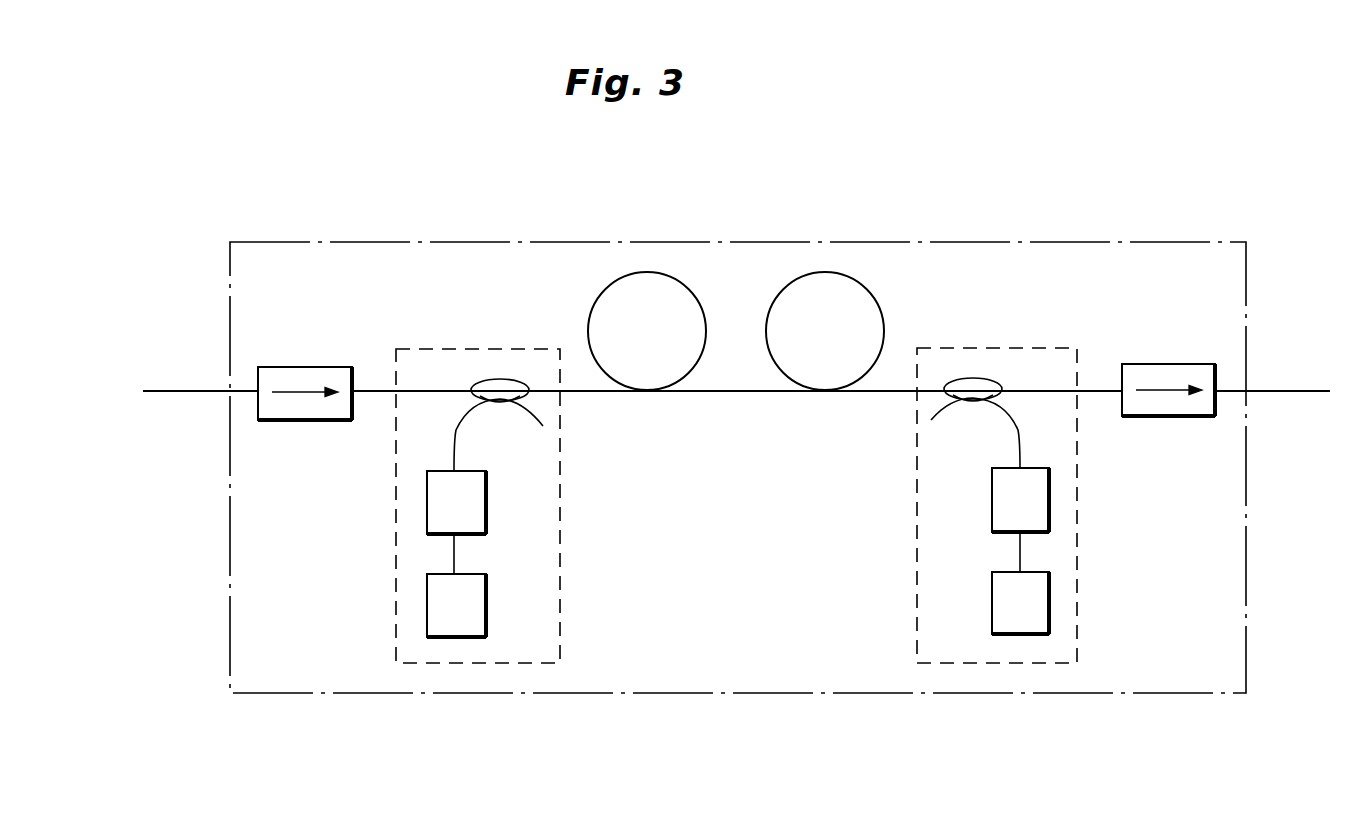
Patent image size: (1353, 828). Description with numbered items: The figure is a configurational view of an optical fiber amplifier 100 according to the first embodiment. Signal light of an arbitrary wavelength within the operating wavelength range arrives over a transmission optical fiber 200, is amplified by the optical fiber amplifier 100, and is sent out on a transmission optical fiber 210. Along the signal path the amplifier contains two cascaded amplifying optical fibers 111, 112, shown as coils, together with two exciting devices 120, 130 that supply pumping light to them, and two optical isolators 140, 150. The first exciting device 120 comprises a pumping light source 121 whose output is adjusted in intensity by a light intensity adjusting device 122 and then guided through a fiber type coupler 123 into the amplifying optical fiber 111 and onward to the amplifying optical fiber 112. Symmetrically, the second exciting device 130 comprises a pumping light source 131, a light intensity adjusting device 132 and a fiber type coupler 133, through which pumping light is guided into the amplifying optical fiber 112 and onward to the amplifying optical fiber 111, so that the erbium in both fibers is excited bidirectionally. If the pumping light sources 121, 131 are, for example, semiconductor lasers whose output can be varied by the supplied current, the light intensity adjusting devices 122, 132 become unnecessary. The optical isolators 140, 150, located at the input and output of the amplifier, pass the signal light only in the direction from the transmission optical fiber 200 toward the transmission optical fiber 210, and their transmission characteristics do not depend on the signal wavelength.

The optical fiber amplifier 100 is at (432, 242).
The amplifying optical fiber 111 is at (655, 272).
The amplifying optical fiber 112 is at (828, 272).
The exciting device 120 is at (488, 485).
The pumping light source 121 is at (427, 608).
The light intensity adjusting device 122 is at (427, 508).
The fiber type coupler 123 is at (502, 378).
The exciting device 130 is at (987, 482).
The pumping light source 131 is at (1049, 595).
The light intensity adjusting device 132 is at (1049, 500).
The fiber type coupler 133 is at (970, 377).
The optical isolator 140 is at (300, 420).
The optical isolator 150 is at (1176, 416).
The transmission optical fiber 200 is at (172, 393).
The transmission optical fiber 210 is at (1300, 392).